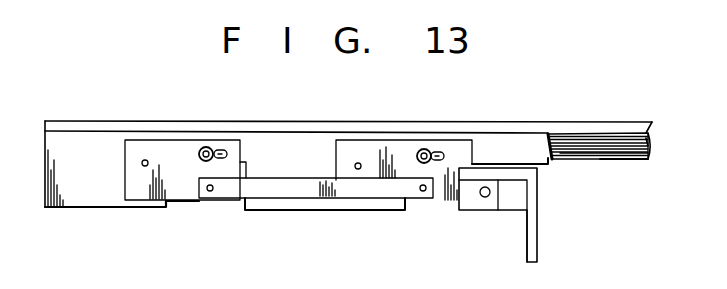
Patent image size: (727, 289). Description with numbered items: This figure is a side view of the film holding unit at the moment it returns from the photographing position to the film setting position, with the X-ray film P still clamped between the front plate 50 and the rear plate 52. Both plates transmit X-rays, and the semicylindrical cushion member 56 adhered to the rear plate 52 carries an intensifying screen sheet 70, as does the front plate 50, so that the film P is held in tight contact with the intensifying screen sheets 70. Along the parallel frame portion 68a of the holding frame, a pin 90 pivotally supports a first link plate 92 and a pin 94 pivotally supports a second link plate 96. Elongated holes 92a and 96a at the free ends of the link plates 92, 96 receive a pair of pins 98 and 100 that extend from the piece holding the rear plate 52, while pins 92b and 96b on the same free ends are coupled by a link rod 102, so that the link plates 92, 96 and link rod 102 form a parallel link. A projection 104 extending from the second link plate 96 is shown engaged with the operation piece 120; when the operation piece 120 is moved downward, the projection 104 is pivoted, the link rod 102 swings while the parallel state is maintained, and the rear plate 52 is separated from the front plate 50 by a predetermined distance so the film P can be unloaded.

The front plate 50 is at (585, 128).
The rear plate 52 is at (593, 153).
The semicylindrical cushion member 56 is at (620, 160).
The parallel frame portion 68a is at (283, 142).
The intensifying screen sheet 70 is at (620, 133).
The pin 90 is at (141, 163).
The first link plate 92 is at (147, 145).
The elongated hole 92a is at (220, 151).
The pin 92b is at (208, 193).
The pin 94 is at (354, 166).
The second link plate 96 is at (365, 150).
The elongated hole 96a is at (436, 152).
The pin 96b is at (422, 193).
The pin 98 is at (203, 148).
The pin 100 is at (425, 148).
The link rod 102 is at (285, 188).
The projection 104 is at (485, 197).
The operation piece 120 is at (508, 213).
The X-ray film P is at (650, 140).